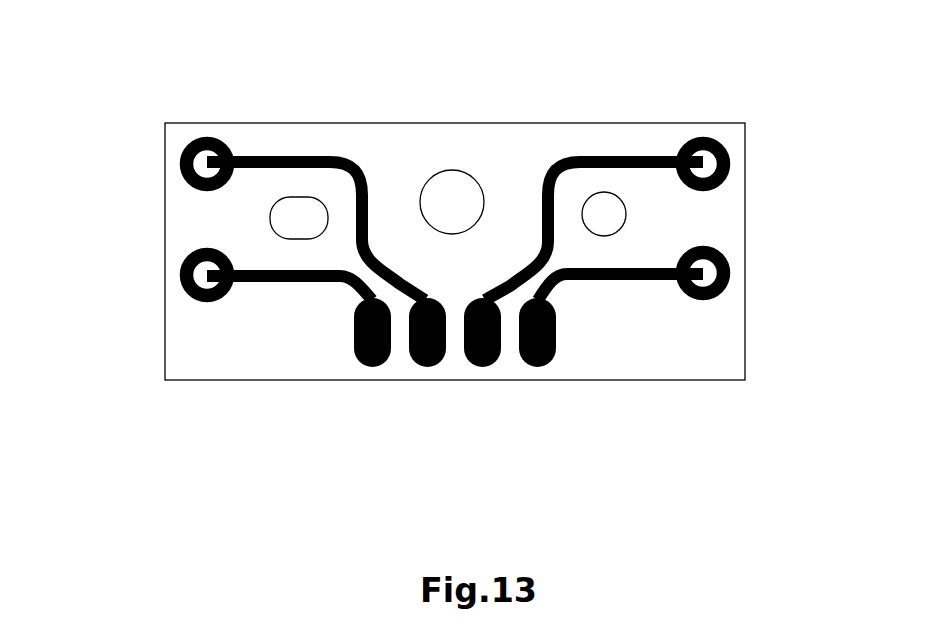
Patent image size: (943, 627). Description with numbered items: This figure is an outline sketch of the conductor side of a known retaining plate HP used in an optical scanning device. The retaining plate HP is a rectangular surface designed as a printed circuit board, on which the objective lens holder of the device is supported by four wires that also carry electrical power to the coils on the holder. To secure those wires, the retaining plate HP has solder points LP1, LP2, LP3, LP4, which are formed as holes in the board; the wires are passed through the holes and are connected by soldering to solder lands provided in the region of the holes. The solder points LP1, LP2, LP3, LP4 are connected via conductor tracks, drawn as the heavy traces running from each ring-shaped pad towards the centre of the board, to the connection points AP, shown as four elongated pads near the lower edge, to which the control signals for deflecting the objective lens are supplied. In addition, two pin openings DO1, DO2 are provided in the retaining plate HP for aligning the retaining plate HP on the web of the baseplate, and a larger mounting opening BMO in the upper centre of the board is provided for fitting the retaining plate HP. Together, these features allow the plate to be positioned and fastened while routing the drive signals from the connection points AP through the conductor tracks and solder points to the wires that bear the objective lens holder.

The retaining plate HP is at (328, 135).
The solder point LP1 is at (182, 162).
The solder point LP2 is at (182, 290).
The solder point LP3 is at (712, 138).
The solder point LP4 is at (705, 270).
The mounting opening BMO is at (463, 170).
The pin opening DO1 is at (603, 238).
The pin opening DO2 is at (302, 228).
The connection points AP is at (537, 367).